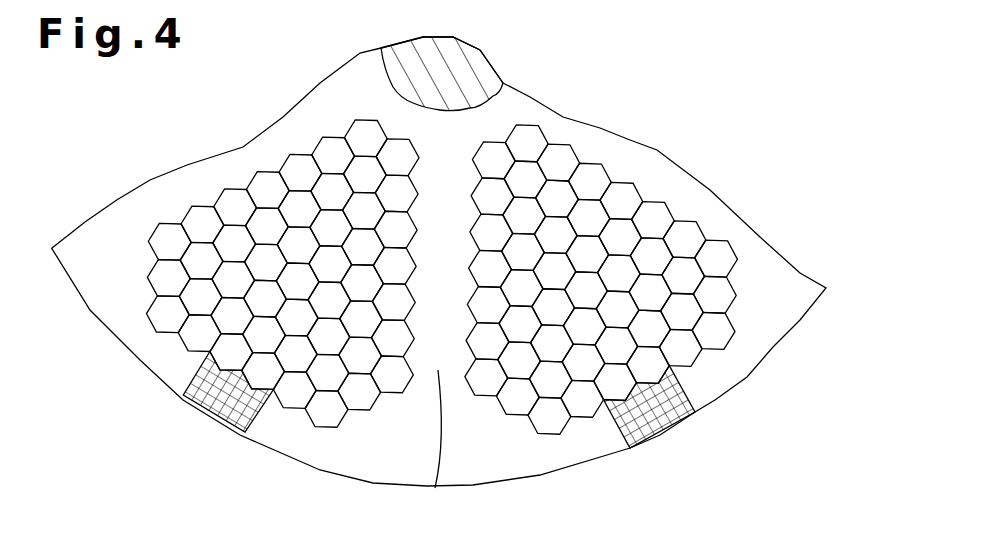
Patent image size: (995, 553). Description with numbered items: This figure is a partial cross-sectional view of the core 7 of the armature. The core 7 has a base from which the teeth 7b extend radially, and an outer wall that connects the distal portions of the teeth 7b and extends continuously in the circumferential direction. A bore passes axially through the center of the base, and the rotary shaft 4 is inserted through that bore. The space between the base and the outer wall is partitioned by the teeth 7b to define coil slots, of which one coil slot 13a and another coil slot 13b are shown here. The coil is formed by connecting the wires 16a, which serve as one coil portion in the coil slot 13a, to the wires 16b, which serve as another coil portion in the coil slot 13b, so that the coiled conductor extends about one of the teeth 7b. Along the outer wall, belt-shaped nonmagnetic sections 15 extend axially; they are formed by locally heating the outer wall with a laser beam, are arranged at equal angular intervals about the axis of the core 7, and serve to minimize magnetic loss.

The rotary shaft 4 is at (463, 62).
The core 7 is at (318, 480).
The teeth 7b is at (436, 450).
The coil slot 13a is at (160, 319).
The coil slot 13b is at (602, 402).
The nonmagnetic section 15 is at (216, 427).
The wires 16a is at (389, 380).
The wires 16b is at (517, 406).